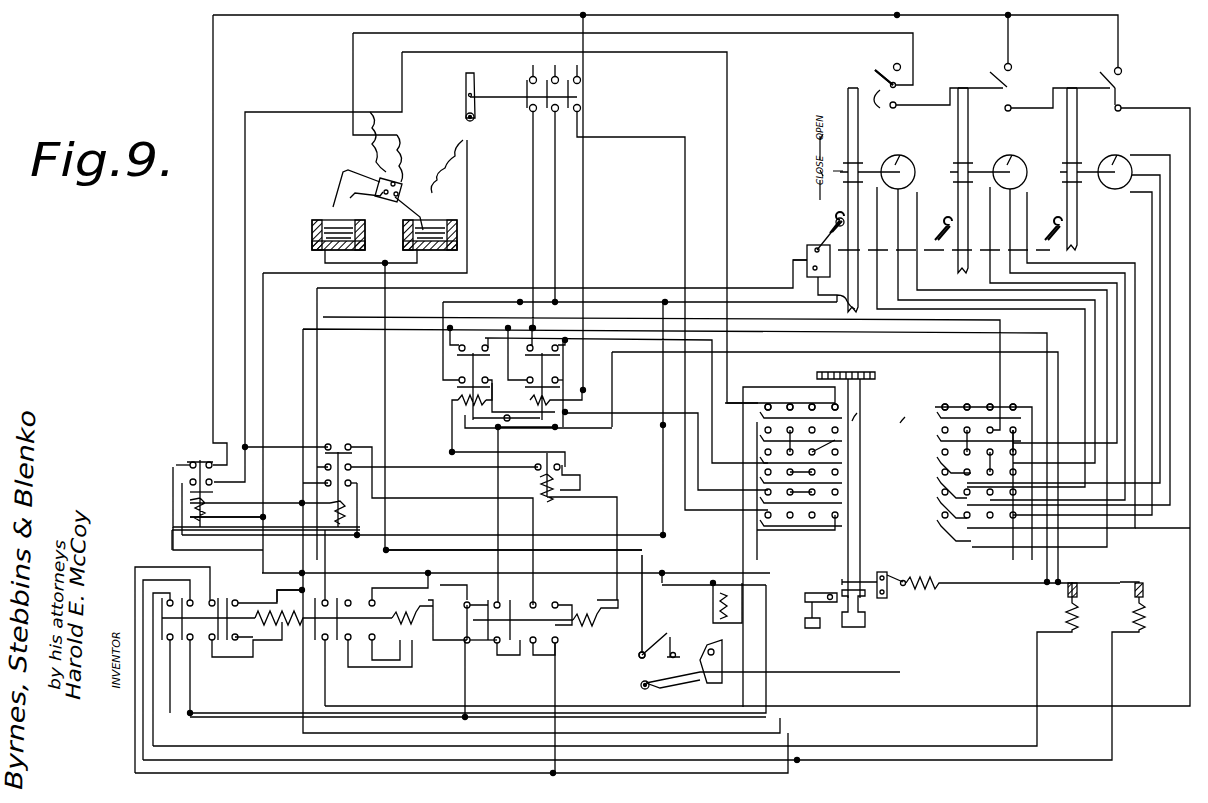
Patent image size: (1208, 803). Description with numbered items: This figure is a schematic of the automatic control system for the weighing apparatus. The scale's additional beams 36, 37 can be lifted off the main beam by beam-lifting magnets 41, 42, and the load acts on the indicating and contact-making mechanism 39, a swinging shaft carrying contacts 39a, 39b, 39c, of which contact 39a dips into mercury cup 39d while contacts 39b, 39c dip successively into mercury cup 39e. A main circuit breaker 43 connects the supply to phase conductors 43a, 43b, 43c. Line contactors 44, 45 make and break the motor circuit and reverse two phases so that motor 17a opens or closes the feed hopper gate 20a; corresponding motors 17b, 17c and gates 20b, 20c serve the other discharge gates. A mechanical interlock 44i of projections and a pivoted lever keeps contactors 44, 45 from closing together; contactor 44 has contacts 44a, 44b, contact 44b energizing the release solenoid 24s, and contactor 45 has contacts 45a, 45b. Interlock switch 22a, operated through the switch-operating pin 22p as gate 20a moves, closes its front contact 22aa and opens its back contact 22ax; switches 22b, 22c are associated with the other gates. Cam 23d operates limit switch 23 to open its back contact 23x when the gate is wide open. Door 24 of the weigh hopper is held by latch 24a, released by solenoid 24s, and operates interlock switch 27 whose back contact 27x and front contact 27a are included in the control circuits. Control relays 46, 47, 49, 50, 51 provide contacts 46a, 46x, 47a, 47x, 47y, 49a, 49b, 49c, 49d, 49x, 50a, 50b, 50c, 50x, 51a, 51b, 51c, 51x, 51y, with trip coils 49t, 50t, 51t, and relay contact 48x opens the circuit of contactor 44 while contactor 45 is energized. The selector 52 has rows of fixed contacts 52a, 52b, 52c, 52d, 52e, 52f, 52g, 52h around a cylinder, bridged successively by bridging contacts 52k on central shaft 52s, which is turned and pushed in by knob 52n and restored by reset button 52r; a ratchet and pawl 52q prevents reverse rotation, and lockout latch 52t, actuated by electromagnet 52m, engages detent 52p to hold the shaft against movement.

The motor 17a is at (973, 342).
The motor b 17b is at (1042, 332).
The motor c 17c is at (1068, 326).
The feed hopper gate 20a is at (820, 203).
The valve stem b 20b is at (957, 200).
The valve stem c 20c is at (1078, 205).
The interlock switch 22a is at (895, 92).
The front contact 22aa is at (873, 72).
The back contact 22ax is at (894, 109).
The switch b 22b is at (1008, 78).
The switch c 22c is at (1118, 78).
The switch-operating pin 22p is at (1100, 110).
The limit switch 23 is at (810, 246).
The back contact 23x is at (800, 260).
The cam 23d is at (818, 295).
The door 24 is at (695, 675).
The latch 24a is at (722, 668).
The release solenoid 24s is at (720, 602).
The interlock switch 27 is at (656, 640).
The front contact 27a is at (684, 647).
The back contact 27x is at (638, 658).
The beam 36 is at (1077, 590).
The beam 37 is at (1143, 590).
The indicating and contact-making mechanism 39 is at (452, 332).
The contact 39a is at (420, 215).
The contact 39b is at (336, 183).
The contact 39c is at (354, 171).
The mercury cup 39d is at (457, 242).
The mercury cup 39e is at (312, 233).
The beam-lifting magnet 41 is at (1080, 618).
The beam-lifting magnet 42 is at (1147, 618).
The main circuit breaker 43 is at (530, 98).
The phase conductor 43a is at (533, 185).
The phase conductor 43b is at (555, 213).
The phase conductor 43c is at (621, 138).
The line contactor 44 is at (457, 402).
The relay contact 44a is at (455, 383).
The contact 44b is at (456, 348).
The mechanical interlock 44i is at (495, 422).
The line contactor 45 is at (528, 400).
The relay contact 45a is at (521, 364).
The relay contact 45b is at (558, 364).
The control relay 46 is at (190, 507).
The contact 46a is at (205, 492).
The contact 46x is at (195, 460).
The control relay 47 is at (266, 423).
The contact 47a is at (336, 446).
The contact 47x is at (360, 484).
The contact 47y is at (368, 467).
The contact 48x is at (543, 458).
The control relay 49 is at (240, 704).
The contact 49a is at (165, 588).
The contact 49b is at (188, 607).
The contact 49c is at (268, 608).
The contact 49d is at (224, 660).
The trip coil 49t is at (295, 627).
The contact 49x is at (217, 602).
The control relay 50 is at (402, 692).
The contact 50a is at (313, 640).
The contact 50b is at (326, 670).
The contact 50c is at (400, 595).
The trip coil 50t is at (435, 630).
The contact 50x is at (380, 668).
The control relay 51 is at (587, 679).
The contact 51a is at (515, 647).
The contact 51b is at (488, 643).
The relay contact 51c is at (561, 644).
The trip coil 51t is at (602, 625).
The relay contact 51x is at (555, 607).
The contact 51y is at (465, 623).
The selector 52 is at (900, 634).
The row of contacts 52a is at (767, 404).
The row of contacts 52b is at (789, 404).
The row of contacts 52c is at (811, 404).
The row of contacts 52d is at (834, 404).
The row of contacts 52e is at (944, 404).
The row of contacts 52f is at (966, 404).
The row of contacts 52g is at (989, 404).
The row of contacts 52h is at (1014, 404).
The bridging contacts 52k is at (888, 418).
The electromagnet 52m is at (920, 585).
The knob 52n is at (855, 622).
The detent 52p is at (842, 583).
The ratchet and pawl 52q is at (855, 371).
The reset button 52r is at (810, 628).
The central shaft 52s is at (850, 418).
The lockout latch 52t is at (890, 572).